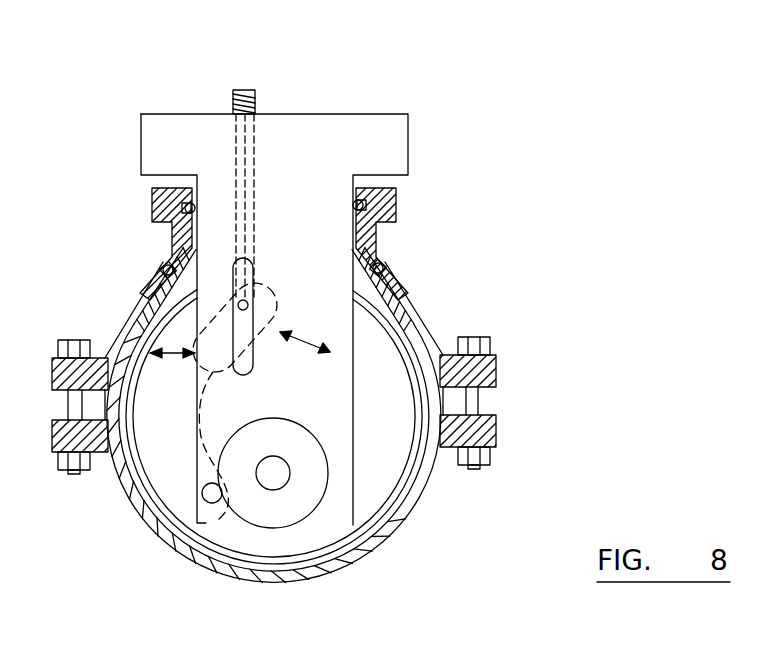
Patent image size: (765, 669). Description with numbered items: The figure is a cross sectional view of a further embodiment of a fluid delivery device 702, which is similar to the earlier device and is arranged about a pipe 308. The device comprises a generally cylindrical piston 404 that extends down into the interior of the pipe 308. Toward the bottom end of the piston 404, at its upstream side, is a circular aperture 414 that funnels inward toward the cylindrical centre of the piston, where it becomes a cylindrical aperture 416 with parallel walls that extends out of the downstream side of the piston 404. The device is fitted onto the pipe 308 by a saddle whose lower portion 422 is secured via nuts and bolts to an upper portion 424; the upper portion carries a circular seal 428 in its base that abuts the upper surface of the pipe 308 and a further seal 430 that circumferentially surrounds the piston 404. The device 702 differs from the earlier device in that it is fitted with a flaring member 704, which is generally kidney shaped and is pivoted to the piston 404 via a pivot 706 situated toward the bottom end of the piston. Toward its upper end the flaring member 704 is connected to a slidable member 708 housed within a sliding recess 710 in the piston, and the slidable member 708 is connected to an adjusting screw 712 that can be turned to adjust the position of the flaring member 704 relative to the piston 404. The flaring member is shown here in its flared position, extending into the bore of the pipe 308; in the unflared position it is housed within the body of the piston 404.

The fluid delivery device 702 is at (513, 252).
The adjusting screw 712 is at (247, 145).
The sliding recess 710 is at (253, 265).
The slidable member 708 is at (262, 300).
The further seal 430 is at (184, 206).
The circular seal 428 is at (163, 268).
The upper portion 424 is at (420, 307).
The lower portion 422 is at (390, 543).
The piston 404 is at (342, 395).
The flaring member 704 is at (173, 462).
The pipe 308 is at (418, 497).
The circular aperture 414 is at (268, 510).
The cylindrical aperture 416 is at (273, 477).
The pivot 706 is at (212, 493).